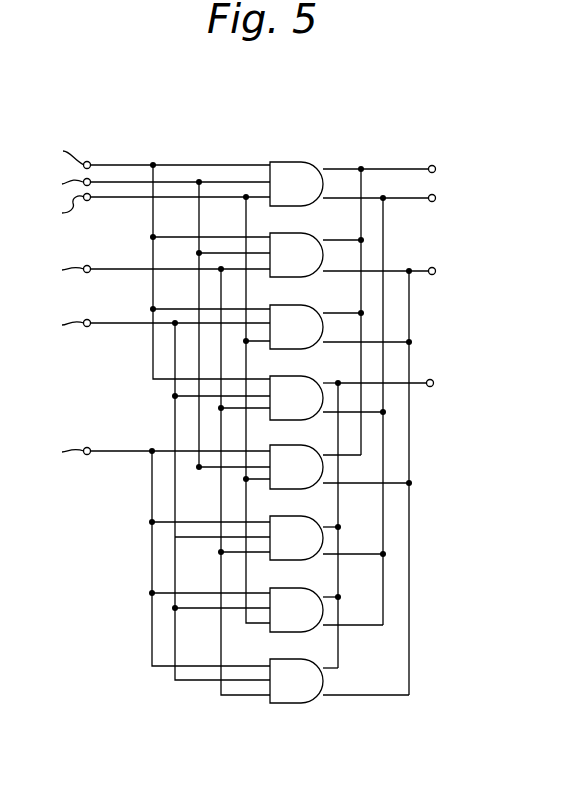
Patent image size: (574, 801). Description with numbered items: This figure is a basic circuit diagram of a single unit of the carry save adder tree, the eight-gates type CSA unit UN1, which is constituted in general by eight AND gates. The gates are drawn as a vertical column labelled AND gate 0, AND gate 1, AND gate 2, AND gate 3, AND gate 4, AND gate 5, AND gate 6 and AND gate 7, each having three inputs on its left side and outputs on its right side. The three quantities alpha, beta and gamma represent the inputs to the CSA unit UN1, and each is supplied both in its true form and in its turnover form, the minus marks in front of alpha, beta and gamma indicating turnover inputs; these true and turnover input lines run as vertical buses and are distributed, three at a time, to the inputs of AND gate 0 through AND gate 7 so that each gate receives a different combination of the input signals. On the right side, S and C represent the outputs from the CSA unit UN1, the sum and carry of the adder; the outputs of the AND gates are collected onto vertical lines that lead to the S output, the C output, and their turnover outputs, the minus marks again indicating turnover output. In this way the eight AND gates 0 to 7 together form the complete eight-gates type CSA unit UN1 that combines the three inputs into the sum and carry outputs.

The CSA unit UN1 is at (418, 121).
The AND gate 0 is at (296, 184).
The AND gate 1 is at (296, 255).
The AND gate 2 is at (296, 327).
The AND gate 3 is at (296, 398).
The AND gate 4 is at (296, 467).
The AND gate 5 is at (296, 538).
The AND gate 6 is at (296, 610).
The AND gate 7 is at (296, 681).